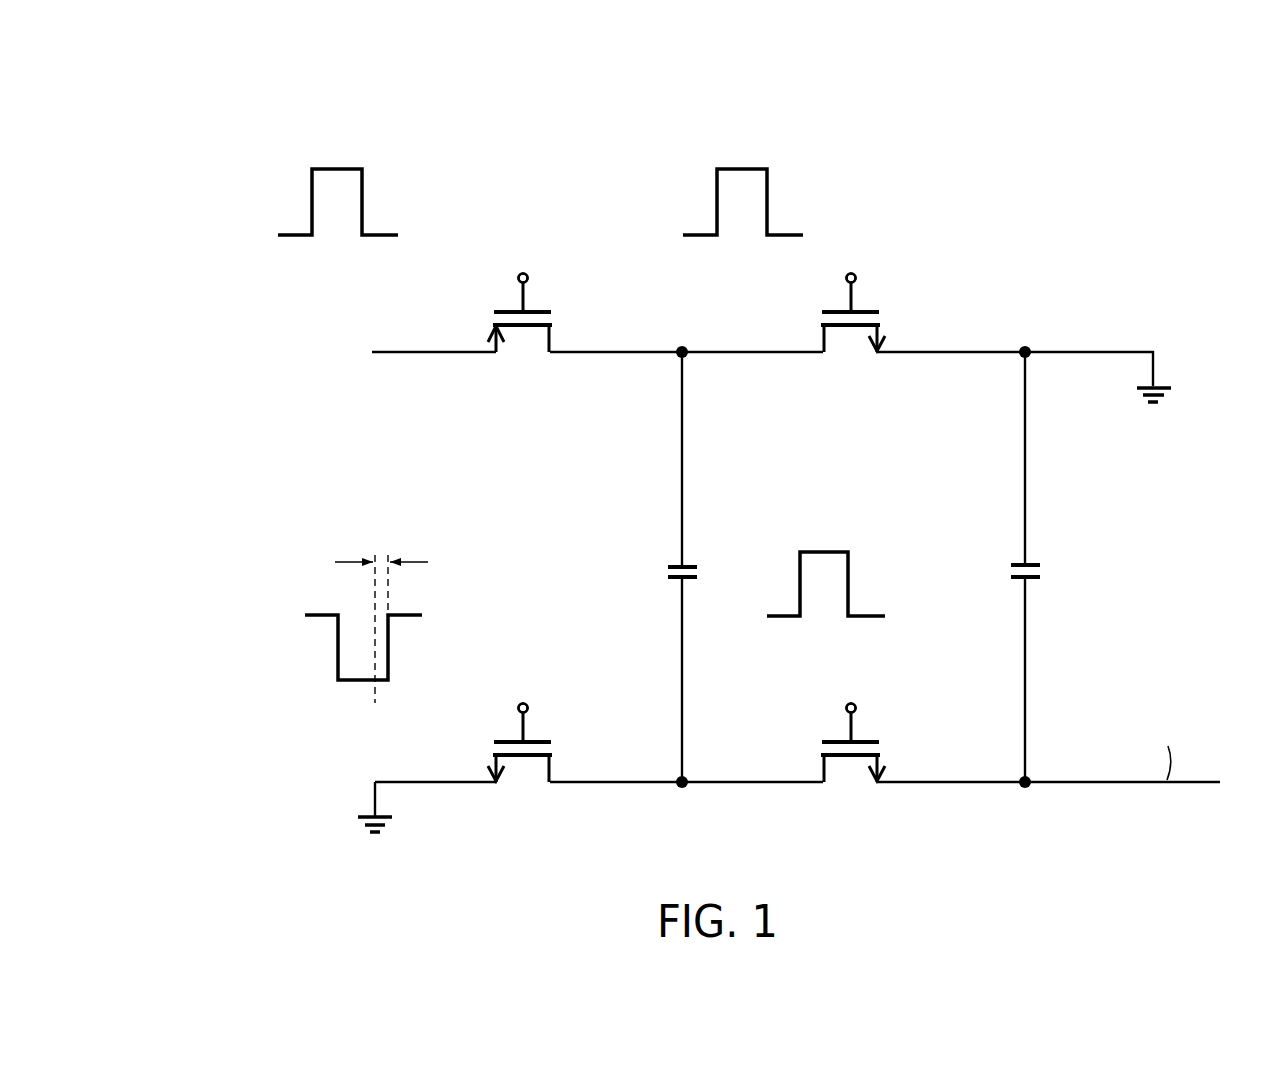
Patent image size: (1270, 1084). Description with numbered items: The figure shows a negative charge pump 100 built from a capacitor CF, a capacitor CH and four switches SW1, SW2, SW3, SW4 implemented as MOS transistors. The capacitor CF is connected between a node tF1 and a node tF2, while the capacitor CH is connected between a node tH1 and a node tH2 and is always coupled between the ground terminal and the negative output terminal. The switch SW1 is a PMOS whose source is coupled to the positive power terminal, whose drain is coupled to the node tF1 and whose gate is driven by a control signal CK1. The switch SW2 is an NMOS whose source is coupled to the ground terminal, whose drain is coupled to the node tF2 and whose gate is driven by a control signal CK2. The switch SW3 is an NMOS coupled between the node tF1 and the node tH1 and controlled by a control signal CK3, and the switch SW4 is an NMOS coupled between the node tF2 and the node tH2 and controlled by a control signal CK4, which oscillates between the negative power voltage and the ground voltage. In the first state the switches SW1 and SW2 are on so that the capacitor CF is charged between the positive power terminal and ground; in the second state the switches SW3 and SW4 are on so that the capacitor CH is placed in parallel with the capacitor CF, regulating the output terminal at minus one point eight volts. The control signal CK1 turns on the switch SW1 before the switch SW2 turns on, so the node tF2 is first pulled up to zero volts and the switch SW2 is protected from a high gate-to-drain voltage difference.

The negative charge pump 100 is at (233, 90).
The switch SW1 is at (523, 342).
The switch SW2 is at (523, 772).
The switch SW3 is at (851, 342).
The switch SW4 is at (851, 772).
The control signal CK1 is at (522, 263).
The control signal CK2 is at (522, 693).
The control signal CK3 is at (853, 263).
The control signal CK4 is at (853, 693).
The capacitor CF is at (661, 572).
The capacitor CH is at (1049, 572).
The node tF1 is at (681, 347).
The node tF2 is at (682, 788).
The node tH1 is at (1024, 347).
The node tH2 is at (1025, 788).